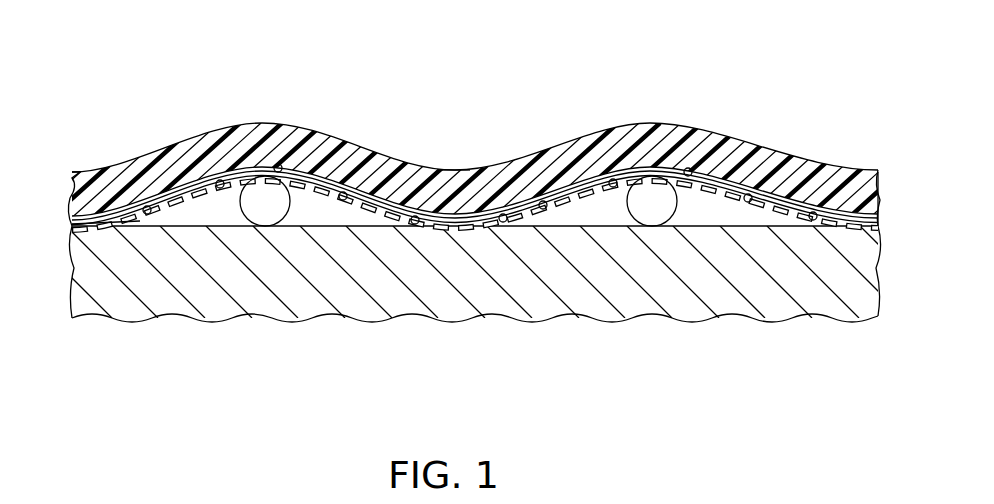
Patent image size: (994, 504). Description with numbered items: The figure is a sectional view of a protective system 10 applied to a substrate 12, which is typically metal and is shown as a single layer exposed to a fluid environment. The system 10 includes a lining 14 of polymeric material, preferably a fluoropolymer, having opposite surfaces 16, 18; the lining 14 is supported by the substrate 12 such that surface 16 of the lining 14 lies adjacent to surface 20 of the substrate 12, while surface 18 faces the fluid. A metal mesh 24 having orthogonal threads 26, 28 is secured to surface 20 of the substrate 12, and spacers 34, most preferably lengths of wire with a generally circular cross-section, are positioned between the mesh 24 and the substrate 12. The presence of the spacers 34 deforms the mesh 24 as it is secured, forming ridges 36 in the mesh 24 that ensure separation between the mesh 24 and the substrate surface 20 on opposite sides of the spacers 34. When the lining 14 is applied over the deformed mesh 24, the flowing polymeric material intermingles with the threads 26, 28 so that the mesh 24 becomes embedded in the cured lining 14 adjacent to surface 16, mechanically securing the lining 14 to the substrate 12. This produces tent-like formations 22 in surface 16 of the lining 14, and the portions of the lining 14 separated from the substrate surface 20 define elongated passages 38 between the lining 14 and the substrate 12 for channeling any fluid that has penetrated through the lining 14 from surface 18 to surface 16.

The protective system 10 is at (880, 148).
The substrate 12 is at (107, 283).
The lining 14 is at (82, 183).
The surface of lining 16 is at (782, 214).
The surface of lining 18 is at (850, 170).
The surface of substrate 20 is at (631, 148).
The tent-like formations 22 is at (337, 193).
The metal mesh 24 is at (105, 216).
The thread of mesh 26 is at (482, 190).
The thread of mesh 28 is at (723, 148).
The spacers 34 is at (262, 192).
The ridges 36 is at (689, 166).
The elongated passages 38 is at (198, 205).